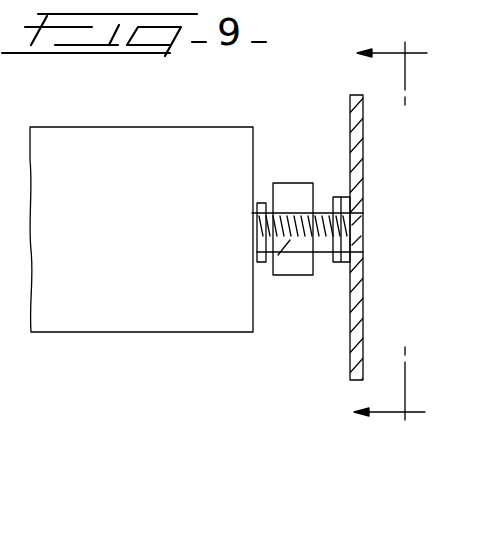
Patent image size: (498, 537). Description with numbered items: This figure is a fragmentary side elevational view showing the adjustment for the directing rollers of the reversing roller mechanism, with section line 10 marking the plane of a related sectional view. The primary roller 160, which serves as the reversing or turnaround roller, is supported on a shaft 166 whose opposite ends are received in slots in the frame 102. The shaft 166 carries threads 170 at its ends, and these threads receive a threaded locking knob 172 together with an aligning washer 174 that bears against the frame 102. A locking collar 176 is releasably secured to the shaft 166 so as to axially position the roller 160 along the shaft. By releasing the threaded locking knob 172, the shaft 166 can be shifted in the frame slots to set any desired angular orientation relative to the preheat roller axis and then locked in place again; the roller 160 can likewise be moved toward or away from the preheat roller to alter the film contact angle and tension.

The section line 10- 10 is at (394, 232).
The frame 102 is at (363, 328).
The primary roller 160 is at (113, 332).
The shaft 166 is at (363, 219).
The threads 170 is at (262, 262).
The threaded locking knob 172 is at (288, 277).
The aligning washer 174 is at (337, 264).
The locking collar 176 is at (257, 212).